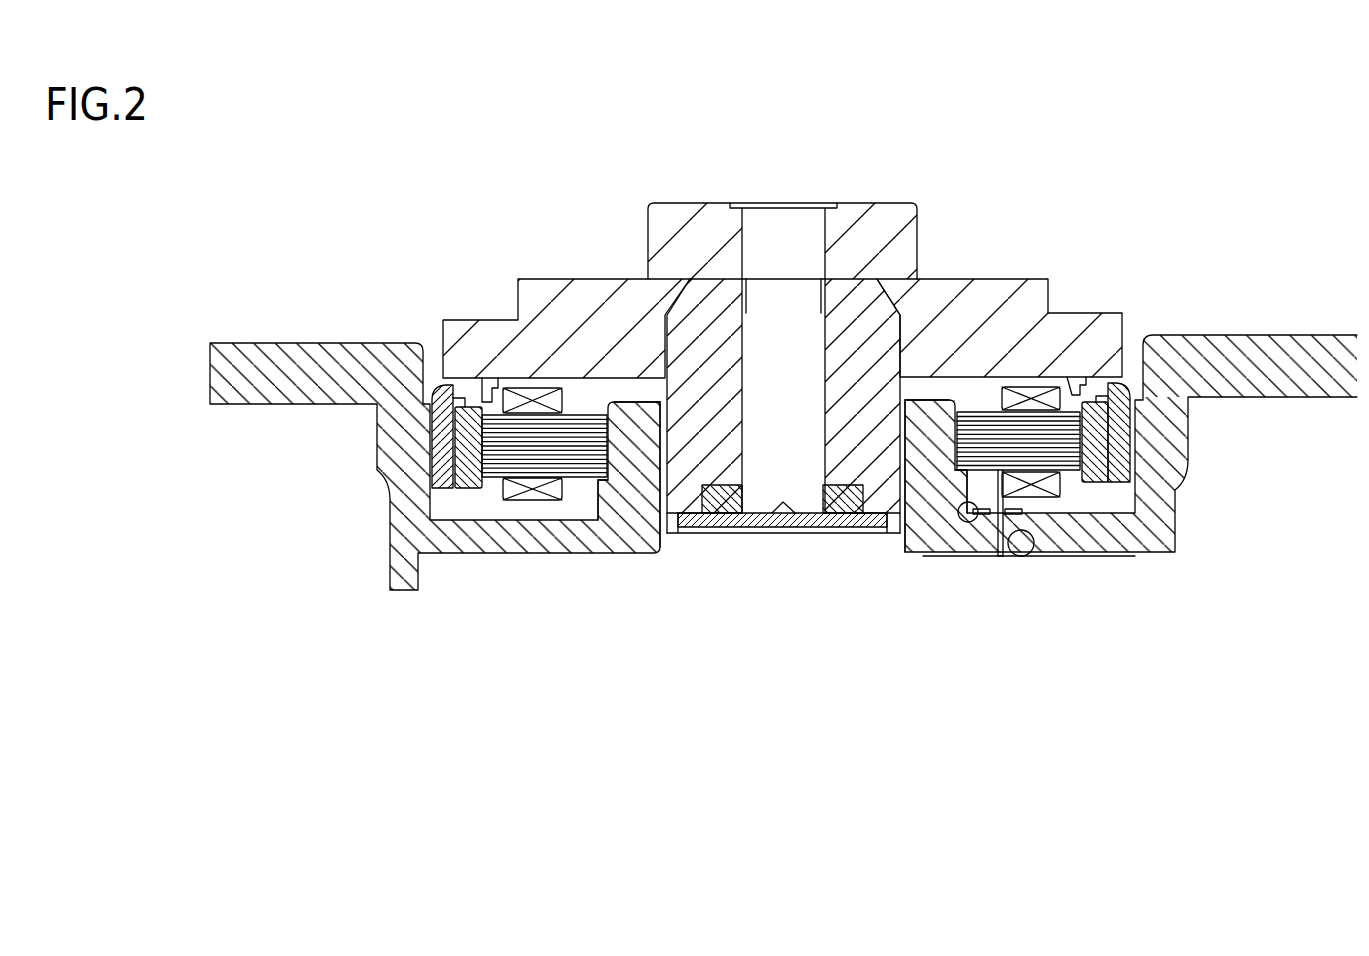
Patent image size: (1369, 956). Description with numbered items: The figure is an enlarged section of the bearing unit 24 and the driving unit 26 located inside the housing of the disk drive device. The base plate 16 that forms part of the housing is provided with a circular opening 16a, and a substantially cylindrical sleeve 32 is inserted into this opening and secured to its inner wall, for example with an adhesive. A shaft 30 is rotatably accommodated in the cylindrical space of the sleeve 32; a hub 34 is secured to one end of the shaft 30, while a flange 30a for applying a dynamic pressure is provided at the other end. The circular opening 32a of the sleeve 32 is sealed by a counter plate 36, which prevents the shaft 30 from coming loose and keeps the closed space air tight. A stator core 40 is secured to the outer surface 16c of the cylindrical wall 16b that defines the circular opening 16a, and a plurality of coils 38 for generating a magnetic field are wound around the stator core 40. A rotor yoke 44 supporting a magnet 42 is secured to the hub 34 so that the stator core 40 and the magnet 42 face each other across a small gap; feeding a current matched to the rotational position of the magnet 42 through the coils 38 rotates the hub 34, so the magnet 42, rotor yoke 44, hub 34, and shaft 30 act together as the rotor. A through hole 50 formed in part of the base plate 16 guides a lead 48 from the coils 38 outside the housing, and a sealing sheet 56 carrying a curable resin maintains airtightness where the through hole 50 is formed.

The base plate 16 is at (477, 548).
The circular opening 16a is at (664, 542).
The cylindrical wall 16b is at (636, 403).
The outer surface 16c is at (624, 478).
The bearing unit 24 is at (863, 357).
The driving unit 26 is at (787, 404).
The shaft 30 is at (760, 500).
The flange 30a is at (843, 520).
The sleeve 32 is at (697, 317).
The circular opening 32a is at (873, 527).
The hub 34 is at (704, 206).
The counter plate 36 is at (692, 525).
The coils 38 is at (510, 392).
The stator core 40 is at (583, 425).
The magnet 42 is at (465, 460).
The rotor yoke 44 is at (437, 417).
The lead 48 is at (993, 537).
The through hole 50 is at (1029, 556).
The sealing sheet 56 is at (965, 523).